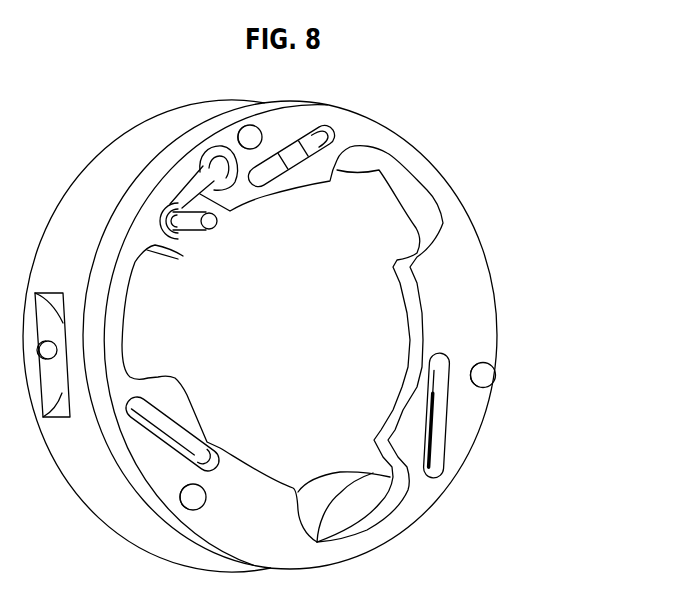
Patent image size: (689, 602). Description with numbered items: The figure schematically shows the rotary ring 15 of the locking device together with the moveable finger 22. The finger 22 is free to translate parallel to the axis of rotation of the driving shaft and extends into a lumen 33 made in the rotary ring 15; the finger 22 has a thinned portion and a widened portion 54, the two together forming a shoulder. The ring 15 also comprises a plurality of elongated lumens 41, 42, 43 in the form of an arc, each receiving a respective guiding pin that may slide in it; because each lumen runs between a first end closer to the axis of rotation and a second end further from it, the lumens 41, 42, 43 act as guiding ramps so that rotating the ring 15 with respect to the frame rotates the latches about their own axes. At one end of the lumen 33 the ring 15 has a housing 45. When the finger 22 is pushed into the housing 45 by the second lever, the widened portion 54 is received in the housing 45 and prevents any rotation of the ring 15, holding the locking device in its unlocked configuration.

The rotary ring 15 is at (512, 330).
The moveable finger 22 is at (213, 224).
The lumen 33 is at (200, 193).
The elongated lumen 41 is at (295, 152).
The elongated lumen 42 is at (442, 436).
The elongated lumen 43 is at (181, 448).
The housing 45 is at (228, 156).
The widened portion 54 is at (199, 234).